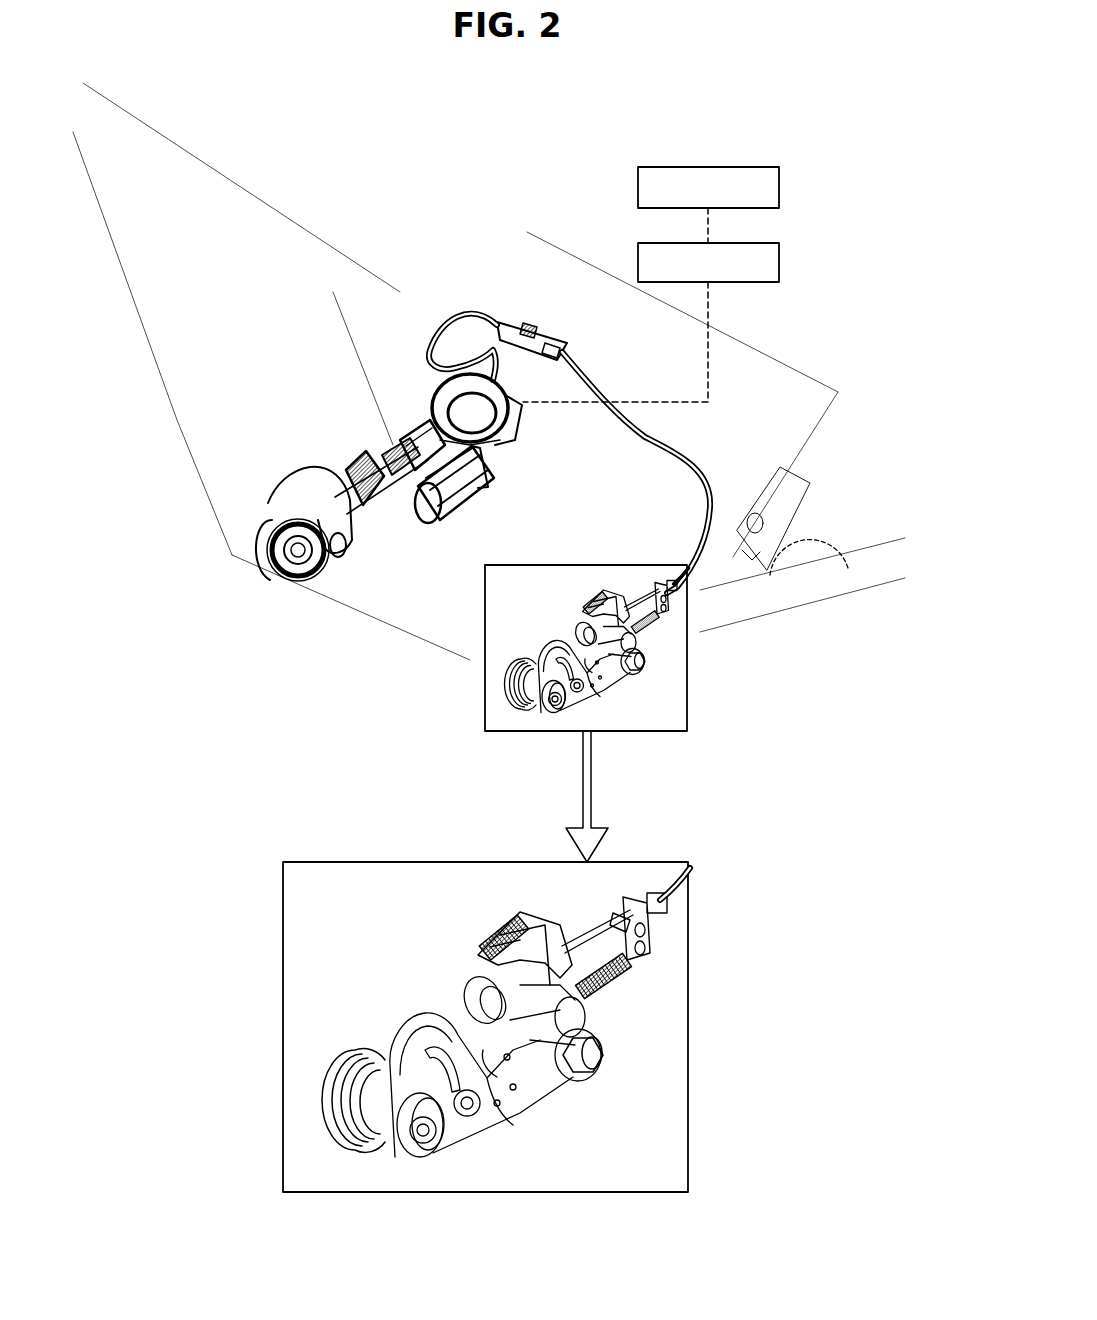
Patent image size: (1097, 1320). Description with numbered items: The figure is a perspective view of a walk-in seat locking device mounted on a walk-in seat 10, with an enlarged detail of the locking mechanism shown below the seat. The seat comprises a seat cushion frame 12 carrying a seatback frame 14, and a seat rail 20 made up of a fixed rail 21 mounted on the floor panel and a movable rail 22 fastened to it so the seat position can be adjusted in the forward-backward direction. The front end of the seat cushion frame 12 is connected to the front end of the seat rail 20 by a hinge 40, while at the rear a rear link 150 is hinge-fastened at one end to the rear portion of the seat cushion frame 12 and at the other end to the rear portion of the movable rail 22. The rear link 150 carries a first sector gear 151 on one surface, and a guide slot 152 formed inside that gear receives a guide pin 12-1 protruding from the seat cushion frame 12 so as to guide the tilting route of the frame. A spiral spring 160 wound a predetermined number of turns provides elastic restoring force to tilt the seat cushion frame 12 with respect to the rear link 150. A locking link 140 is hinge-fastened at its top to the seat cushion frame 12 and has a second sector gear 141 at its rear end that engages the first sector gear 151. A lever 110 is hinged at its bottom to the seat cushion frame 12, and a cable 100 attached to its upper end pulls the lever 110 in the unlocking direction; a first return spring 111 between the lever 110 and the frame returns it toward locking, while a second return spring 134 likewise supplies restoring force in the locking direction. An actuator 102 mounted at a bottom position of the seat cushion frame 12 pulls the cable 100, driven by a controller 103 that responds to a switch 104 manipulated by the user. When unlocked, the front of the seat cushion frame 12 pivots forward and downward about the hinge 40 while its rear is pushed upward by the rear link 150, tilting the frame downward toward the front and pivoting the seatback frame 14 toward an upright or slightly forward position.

The walk-in seat 10 is at (538, 184).
The seatback frame 14 is at (387, 313).
The actuator 102 is at (497, 397).
The switch 104 is at (780, 187).
The controller 103 is at (780, 263).
The hinge 40 is at (755, 547).
The seat cushion frame 12 is at (693, 590).
The seat rail 20 is at (784, 718).
The fixed rail 21 is at (818, 607).
The movable rail 22 is at (758, 607).
The cable 100 is at (577, 937).
The lever 110 is at (522, 907).
The first return spring 111 is at (500, 928).
The first sector gear 151 is at (470, 1010).
The guide slot 152 is at (445, 1043).
The second return spring 134 is at (632, 977).
The locking link 140 is at (513, 1062).
The second sector gear 141 is at (487, 1077).
The spiral spring 160 is at (333, 1147).
The rear link 150 is at (430, 1165).
The guide pin 12-1 is at (487, 1135).